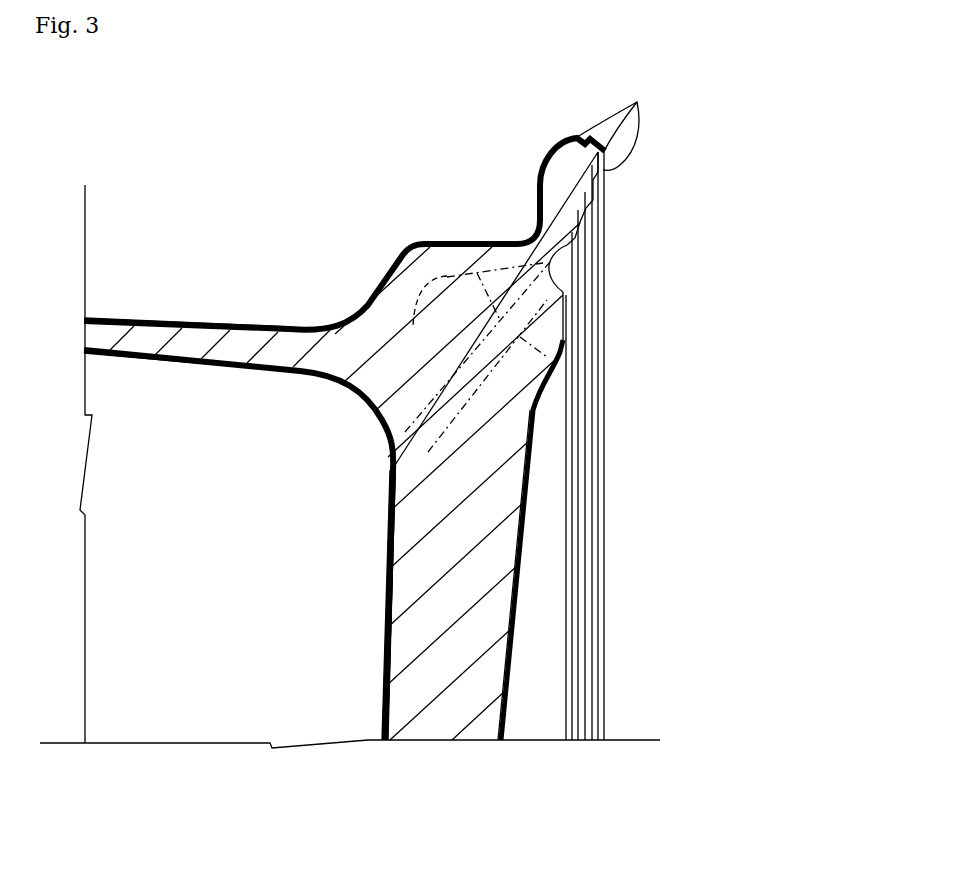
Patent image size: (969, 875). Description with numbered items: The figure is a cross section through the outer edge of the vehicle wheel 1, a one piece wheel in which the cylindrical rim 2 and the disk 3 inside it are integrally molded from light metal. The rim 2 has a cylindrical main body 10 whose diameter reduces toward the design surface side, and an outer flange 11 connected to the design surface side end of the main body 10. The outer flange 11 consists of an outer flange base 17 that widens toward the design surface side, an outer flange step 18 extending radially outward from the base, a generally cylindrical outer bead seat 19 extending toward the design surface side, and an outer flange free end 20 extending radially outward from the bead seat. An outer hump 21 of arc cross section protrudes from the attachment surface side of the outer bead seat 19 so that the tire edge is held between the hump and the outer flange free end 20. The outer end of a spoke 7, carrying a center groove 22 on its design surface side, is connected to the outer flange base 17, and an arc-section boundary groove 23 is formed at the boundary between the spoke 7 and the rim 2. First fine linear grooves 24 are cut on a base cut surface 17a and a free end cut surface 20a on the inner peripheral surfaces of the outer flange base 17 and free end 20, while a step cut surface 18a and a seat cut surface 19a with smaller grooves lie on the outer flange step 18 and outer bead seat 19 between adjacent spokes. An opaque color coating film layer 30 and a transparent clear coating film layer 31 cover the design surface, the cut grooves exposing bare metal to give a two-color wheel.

The vehicle wheel 1 is at (707, 230).
The rim 2 is at (228, 245).
The disk 3 is at (443, 702).
The spoke 7 is at (385, 592).
The main body 10 is at (112, 318).
The outer flange 11 is at (478, 148).
The outer flange base 17 is at (325, 352).
The base cut surface 17a is at (360, 400).
The outer flange step 18 is at (380, 275).
The step cut surface 18a is at (447, 274).
The outer bead seat 19 is at (502, 242).
The seat cut surface 19a is at (600, 368).
The outer flange free end 20 is at (570, 158).
The free end cut surface 20a is at (592, 208).
The outer hump 21 is at (415, 240).
The center groove 22 is at (503, 712).
The boundary groove 23 is at (553, 272).
The first fine linear groove 24 is at (634, 116).
The color coating film layer 30 is at (170, 318).
The clear coating film layer 31 is at (245, 318).